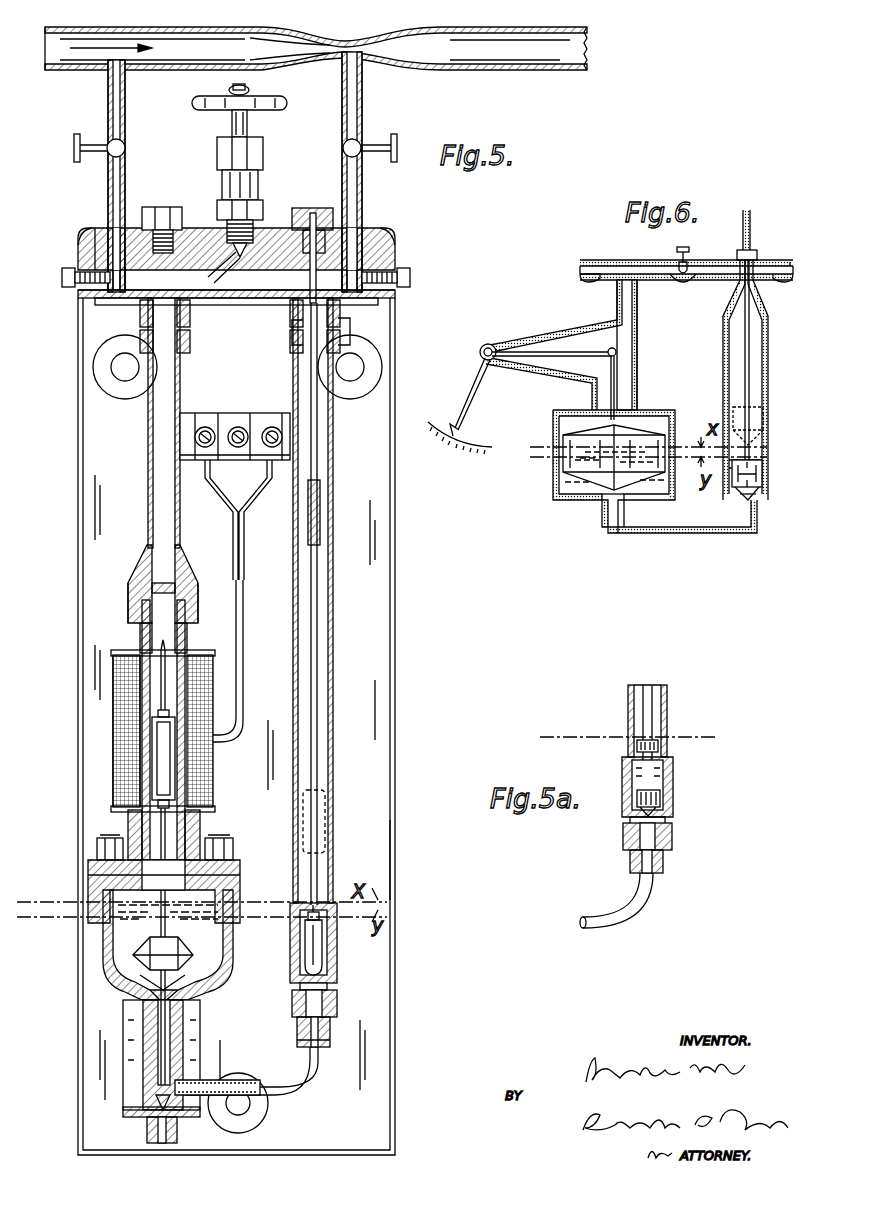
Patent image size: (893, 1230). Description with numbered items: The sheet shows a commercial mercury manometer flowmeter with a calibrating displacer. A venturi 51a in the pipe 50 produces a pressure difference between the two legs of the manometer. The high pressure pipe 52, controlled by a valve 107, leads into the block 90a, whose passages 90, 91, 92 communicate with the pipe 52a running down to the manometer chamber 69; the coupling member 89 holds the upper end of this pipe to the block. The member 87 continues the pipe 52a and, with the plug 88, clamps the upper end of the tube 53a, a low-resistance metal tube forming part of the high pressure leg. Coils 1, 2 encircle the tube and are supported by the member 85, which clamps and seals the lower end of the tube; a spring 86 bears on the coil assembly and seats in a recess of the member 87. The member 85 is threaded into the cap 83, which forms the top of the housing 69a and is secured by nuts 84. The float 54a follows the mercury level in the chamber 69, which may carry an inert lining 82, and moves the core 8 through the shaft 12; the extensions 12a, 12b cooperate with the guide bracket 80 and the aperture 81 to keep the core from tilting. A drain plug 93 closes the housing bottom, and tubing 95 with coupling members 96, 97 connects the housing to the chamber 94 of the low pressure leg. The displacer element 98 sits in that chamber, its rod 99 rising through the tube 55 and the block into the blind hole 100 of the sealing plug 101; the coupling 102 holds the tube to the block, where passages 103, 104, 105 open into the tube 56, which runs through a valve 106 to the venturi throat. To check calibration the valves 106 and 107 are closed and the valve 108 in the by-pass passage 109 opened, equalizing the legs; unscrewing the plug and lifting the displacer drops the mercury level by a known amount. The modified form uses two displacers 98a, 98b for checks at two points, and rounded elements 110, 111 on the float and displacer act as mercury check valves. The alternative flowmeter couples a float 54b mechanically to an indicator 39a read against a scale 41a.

In FIG. 5, the coil 1 is at (114, 690).
In FIG. 5, the coil 2 is at (128, 780).
In FIG. 5, the core 8 is at (168, 763).
In FIG. 5, the shaft 12 is at (173, 827).
In FIG. 5, the extension 12a is at (165, 686).
In FIG. 5, the extension 12b is at (168, 1042).
In FIG. 6, the indicator 39a is at (476, 398).
In FIG. 6, the scale 41a is at (462, 434).
In FIG. 5, the pipe 50 is at (463, 70).
In FIG. 5, the venturi 51a is at (323, 62).
In FIG. 5, the pipe 52 is at (126, 118).
In FIG. 6, the pipe 52 is at (590, 262).
In FIG. 5, the pipe 52a is at (150, 505).
In FIG. 5, the tube 53a is at (130, 648).
In FIG. 5, the float 54a is at (112, 945).
In FIG. 6, the float 54b is at (553, 472).
In FIG. 5, the tube 55 is at (326, 807).
In FIG. 6, the tube 55 is at (724, 378).
In FIG. 5, the tube 56 is at (363, 200).
In FIG. 6, the tube 56 is at (785, 260).
In FIG. 5, the manometer chamber 69 is at (143, 895).
In FIG. 6, the manometer chamber 69 is at (652, 412).
In FIG. 5, the housing 69a is at (225, 967).
In FIG. 5, the guide bracket 80 is at (186, 630).
In FIG. 5, the aperture 81 is at (140, 1010).
In FIG. 5, the lining 82 is at (195, 950).
In FIG. 5, the cap 83 is at (242, 872).
In FIG. 5, the nuts 84 is at (97, 850).
In FIG. 5, the member 85 is at (197, 816).
In FIG. 5, the spring 86 is at (188, 648).
In FIG. 5, the member 87 is at (205, 585).
In FIG. 5, the plug 88 is at (210, 555).
In FIG. 5, the coupling member 89 is at (188, 352).
In FIG. 5, the passage 90 is at (163, 312).
In FIG. 5, the block 90a is at (85, 241).
In FIG. 5, the passage 91 is at (110, 278).
In FIG. 5, the passage 92 is at (96, 238).
In FIG. 5, the drain plug 93 is at (177, 1140).
In FIG. 5, the chamber 94 is at (338, 963).
In FIG. 5, the tubing 95 is at (282, 1095).
In FIG. 5, the coupling member 96 is at (330, 1030).
In FIG. 5, the coupling member 97 is at (333, 1005).
In FIG. 5, the displacer element 98 is at (331, 838).
In FIG. 6, the displacer element 98 is at (763, 463).
In FIG. 5A, the displacer 98a is at (672, 792).
In FIG. 5A, the displacer 98b is at (660, 747).
In FIG. 5, the rod 99 is at (318, 645).
In FIG. 6, the rod 99 is at (752, 232).
In FIG. 5A, the rod 99 is at (653, 707).
In FIG. 5, the blind hole 100 is at (291, 238).
In FIG. 5, the sealing plug 101 is at (312, 212).
In FIG. 5, the coupling 102 is at (340, 345).
In FIG. 5, the passage 103 is at (305, 322).
In FIG. 5, the passage 104 is at (365, 276).
In FIG. 5, the passage 105 is at (355, 252).
In FIG. 5, the valve 106 is at (420, 128).
In FIG. 5, the valve 107 is at (78, 142).
In FIG. 5, the valve 108 is at (233, 240).
In FIG. 6, the valve 108 is at (684, 262).
In FIG. 5, the by-pass passage 109 is at (213, 232).
In FIG. 6, the by-pass passage 109 is at (652, 270).
In FIG. 5, the rounded element 110 is at (195, 988).
In FIG. 6, the rounded element 110 is at (597, 500).
In FIG. 5, the rounded element 111 is at (338, 1003).
In FIG. 6, the rounded element 111 is at (753, 500).
In FIG. 5A, the rounded element 111 is at (672, 814).